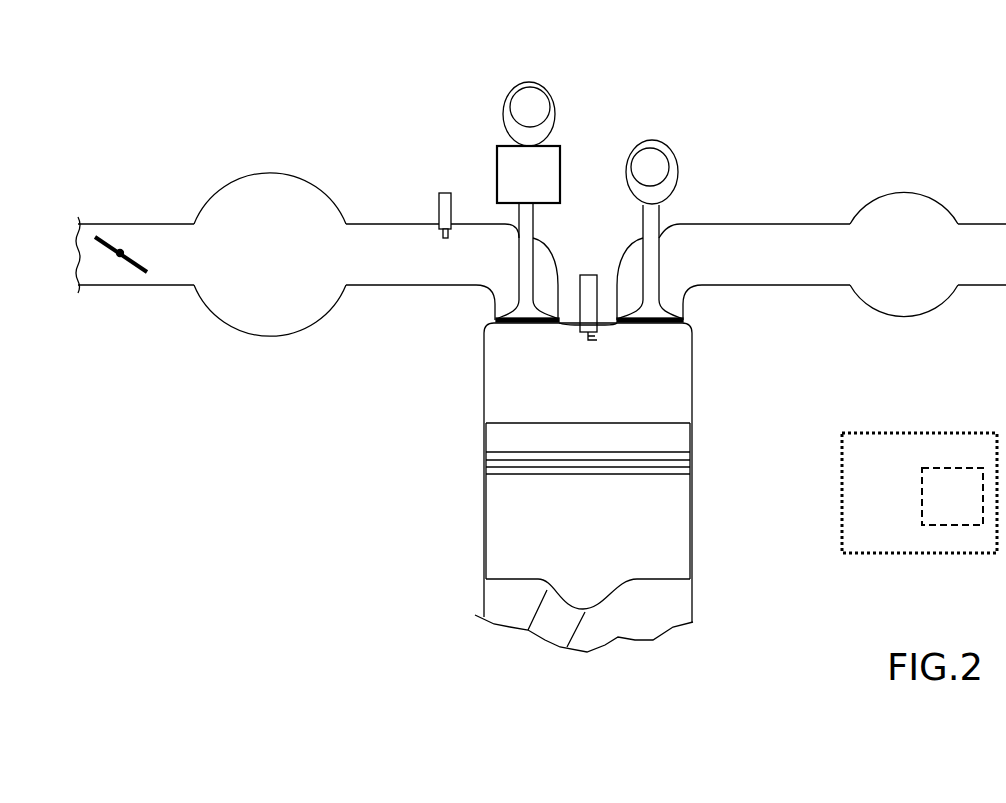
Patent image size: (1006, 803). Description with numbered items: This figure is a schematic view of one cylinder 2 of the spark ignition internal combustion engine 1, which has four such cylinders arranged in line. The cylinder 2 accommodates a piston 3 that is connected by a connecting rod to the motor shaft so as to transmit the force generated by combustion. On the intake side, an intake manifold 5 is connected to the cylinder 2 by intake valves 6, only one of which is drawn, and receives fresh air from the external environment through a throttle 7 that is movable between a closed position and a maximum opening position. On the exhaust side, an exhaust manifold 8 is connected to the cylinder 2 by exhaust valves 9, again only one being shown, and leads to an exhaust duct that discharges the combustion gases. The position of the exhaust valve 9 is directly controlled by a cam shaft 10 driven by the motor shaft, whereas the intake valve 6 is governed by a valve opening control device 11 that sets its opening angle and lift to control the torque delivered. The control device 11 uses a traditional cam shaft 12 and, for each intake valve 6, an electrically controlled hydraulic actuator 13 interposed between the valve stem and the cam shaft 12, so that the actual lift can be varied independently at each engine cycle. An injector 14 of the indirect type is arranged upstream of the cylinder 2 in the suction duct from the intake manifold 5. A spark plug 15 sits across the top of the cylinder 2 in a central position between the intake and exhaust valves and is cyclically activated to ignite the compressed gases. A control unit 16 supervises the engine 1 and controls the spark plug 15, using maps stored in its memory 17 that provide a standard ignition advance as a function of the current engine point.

The spark ignition internal combustion engine 1 is at (235, 98).
The cylinder 2 is at (505, 395).
The piston 3 is at (655, 513).
The intake manifold 5 is at (277, 212).
The intake valve 6 is at (525, 325).
The throttle 7 is at (116, 251).
The exhaust manifold 8 is at (903, 227).
The exhaust valve 9 is at (655, 325).
The cam shaft 10 is at (663, 165).
The valve opening control device 11 is at (448, 97).
The cam shaft 12 is at (540, 108).
The hydraulic actuator 13 is at (515, 188).
The injector 14 is at (445, 194).
The spark plug 15 is at (588, 280).
The control unit 16 is at (860, 506).
The memory 17 is at (940, 506).